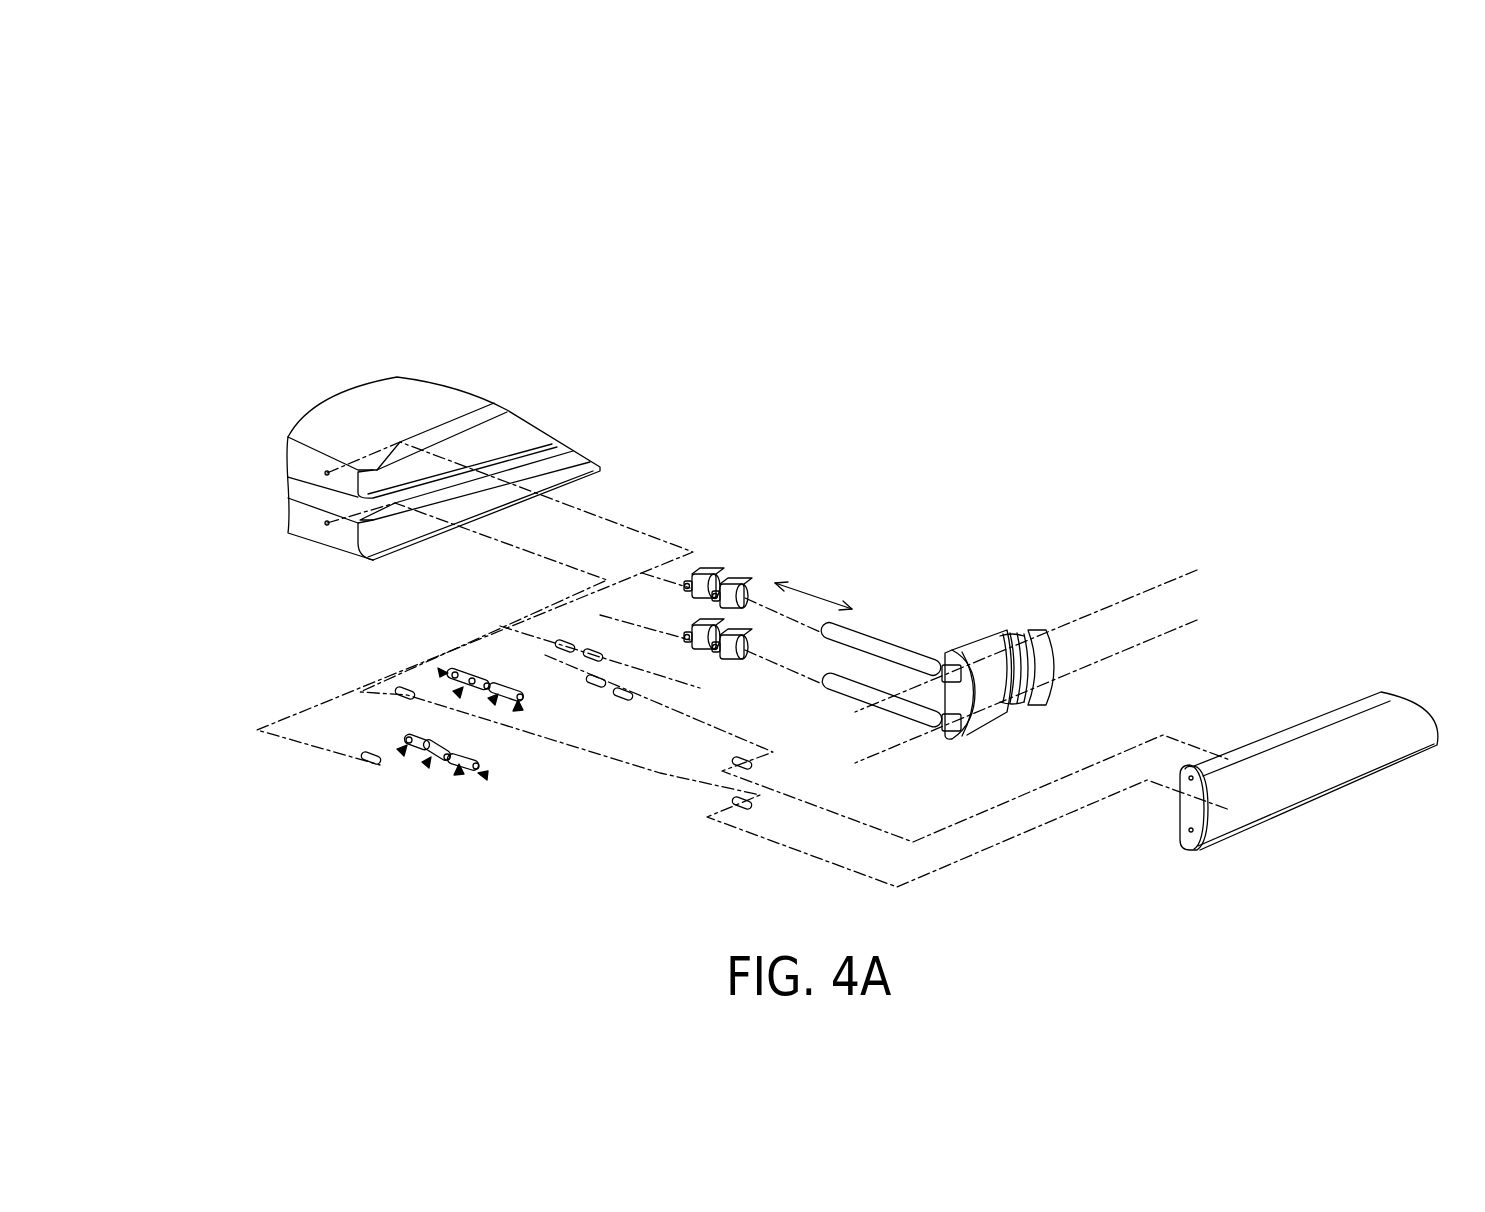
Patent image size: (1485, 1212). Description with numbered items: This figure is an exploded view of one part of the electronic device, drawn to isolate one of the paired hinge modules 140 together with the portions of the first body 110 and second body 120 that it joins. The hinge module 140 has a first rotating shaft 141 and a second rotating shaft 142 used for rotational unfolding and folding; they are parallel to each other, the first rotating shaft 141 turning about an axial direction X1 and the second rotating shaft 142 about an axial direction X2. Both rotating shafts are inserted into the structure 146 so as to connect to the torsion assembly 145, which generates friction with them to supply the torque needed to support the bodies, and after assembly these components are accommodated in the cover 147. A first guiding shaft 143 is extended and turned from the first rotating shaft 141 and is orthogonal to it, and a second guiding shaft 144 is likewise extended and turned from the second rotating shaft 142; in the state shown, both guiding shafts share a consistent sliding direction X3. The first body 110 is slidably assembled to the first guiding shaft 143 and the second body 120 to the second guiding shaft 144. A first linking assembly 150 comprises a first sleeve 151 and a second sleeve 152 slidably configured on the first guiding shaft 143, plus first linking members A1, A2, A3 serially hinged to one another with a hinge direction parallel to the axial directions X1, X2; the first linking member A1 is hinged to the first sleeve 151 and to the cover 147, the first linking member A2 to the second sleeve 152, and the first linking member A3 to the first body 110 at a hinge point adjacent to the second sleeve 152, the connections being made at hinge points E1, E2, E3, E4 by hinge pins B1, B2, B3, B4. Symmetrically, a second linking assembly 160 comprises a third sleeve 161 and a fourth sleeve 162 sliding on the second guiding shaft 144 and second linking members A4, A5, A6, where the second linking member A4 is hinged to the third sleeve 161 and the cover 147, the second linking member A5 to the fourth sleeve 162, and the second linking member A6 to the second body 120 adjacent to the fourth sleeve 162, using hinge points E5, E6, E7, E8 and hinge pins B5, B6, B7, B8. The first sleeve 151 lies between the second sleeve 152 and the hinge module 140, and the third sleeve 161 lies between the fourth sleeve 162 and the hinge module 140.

The first body 110 is at (376, 408).
The second body 120 is at (322, 540).
The hinge module 140 is at (192, 130).
The first rotating shaft 141 is at (940, 672).
The second rotating shaft 142 is at (938, 757).
The first guiding shaft 143 is at (858, 640).
The second guiding shaft 144 is at (835, 700).
The torsion assembly 145 is at (1032, 700).
The structure 146 is at (1022, 740).
The cover 147 is at (1358, 812).
The first linking assembly 150 is at (368, 130).
The first sleeve 151 is at (740, 592).
The second sleeve 152 is at (712, 570).
The second linking assembly 160 is at (558, 130).
The third sleeve 161 is at (755, 676).
The fourth sleeve 162 is at (686, 676).
The first linking member A1 is at (518, 690).
The first linking member A2 is at (485, 682).
The first linking member A3 is at (460, 677).
The second linking member A4 is at (552, 782).
The second linking member A5 is at (442, 760).
The second linking member A6 is at (408, 740).
The hinge pin B1 is at (735, 761).
The hinge pin B2 is at (588, 652).
The hinge pin B3 is at (558, 645).
The hinge pin B4 is at (397, 691).
The hinge pin B5 is at (763, 820).
The hinge pin B6 is at (625, 698).
The hinge pin B7 is at (605, 680).
The hinge pin B8 is at (370, 763).
The hinge point E1 is at (519, 709).
The hinge point E2 is at (491, 701).
The hinge point E3 is at (456, 694).
The hinge point E4 is at (440, 672).
The hinge point E5 is at (486, 777).
The hinge point E6 is at (459, 773).
The hinge point E7 is at (426, 765).
The hinge point E8 is at (401, 753).
The axial direction X1 is at (1044, 633).
The axial direction X2 is at (1044, 683).
The sliding direction X3 is at (813, 584).